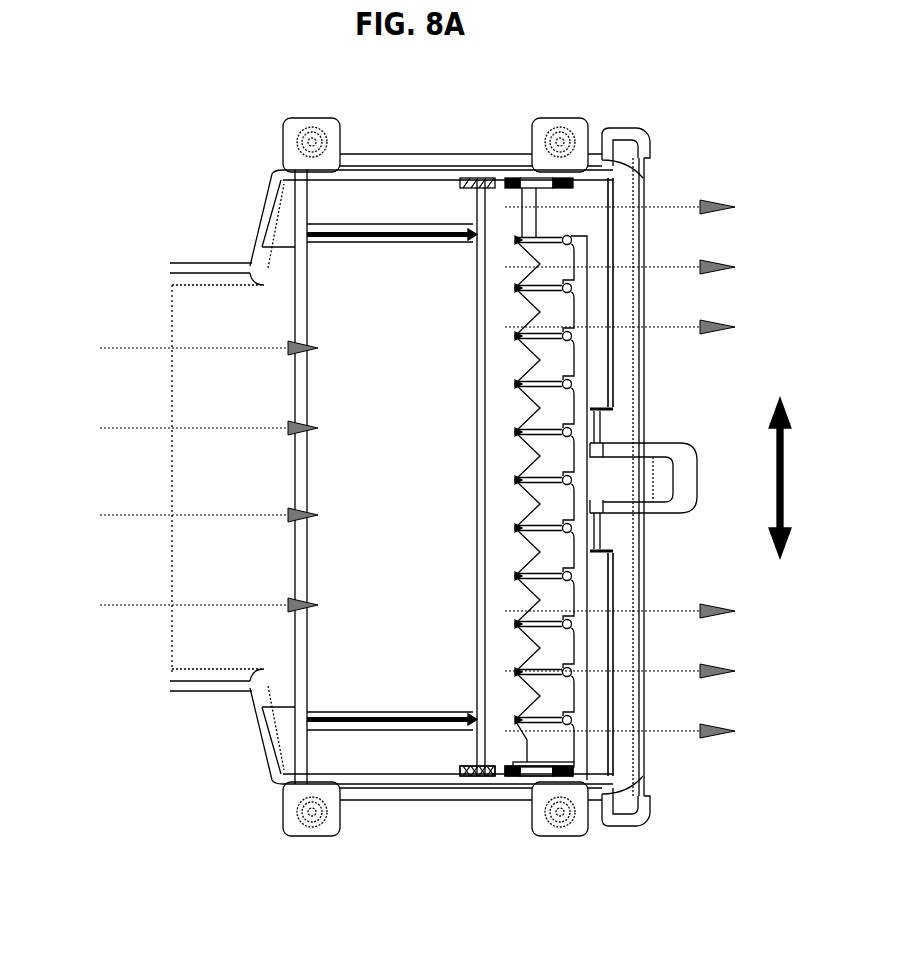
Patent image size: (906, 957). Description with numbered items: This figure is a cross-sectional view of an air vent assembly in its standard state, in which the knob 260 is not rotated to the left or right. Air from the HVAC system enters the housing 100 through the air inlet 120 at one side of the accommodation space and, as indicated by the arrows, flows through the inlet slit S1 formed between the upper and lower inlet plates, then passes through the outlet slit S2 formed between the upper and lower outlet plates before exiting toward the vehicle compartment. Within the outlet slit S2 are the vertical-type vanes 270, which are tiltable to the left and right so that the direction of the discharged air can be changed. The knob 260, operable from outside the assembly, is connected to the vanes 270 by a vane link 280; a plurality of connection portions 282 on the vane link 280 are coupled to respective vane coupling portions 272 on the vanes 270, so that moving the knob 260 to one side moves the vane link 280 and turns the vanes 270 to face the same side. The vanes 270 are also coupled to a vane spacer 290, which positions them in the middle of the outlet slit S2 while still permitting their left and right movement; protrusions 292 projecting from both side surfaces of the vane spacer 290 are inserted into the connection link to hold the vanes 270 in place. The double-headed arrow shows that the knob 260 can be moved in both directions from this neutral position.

The housing 100 is at (192, 263).
The air inlet 120 is at (172, 320).
The vanes 270 is at (538, 235).
The vane coupling portions 272 is at (566, 235).
The connection portions 282 is at (578, 234).
The vane link 280 is at (590, 372).
The knob 260 is at (683, 506).
The vane spacer 290 is at (495, 740).
The protrusions 292 is at (563, 776).
The inlet slit S1 is at (327, 673).
The outlet slit S2 is at (548, 701).